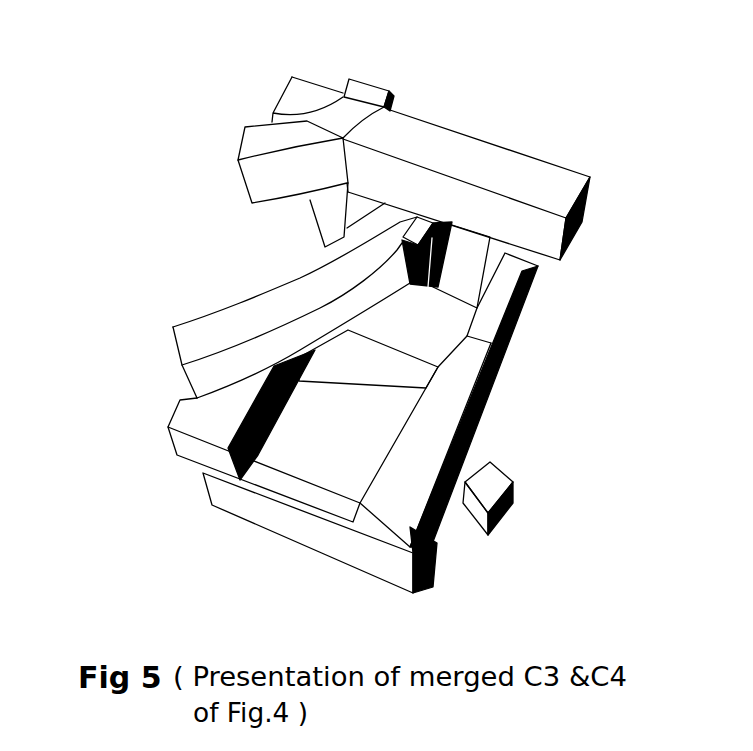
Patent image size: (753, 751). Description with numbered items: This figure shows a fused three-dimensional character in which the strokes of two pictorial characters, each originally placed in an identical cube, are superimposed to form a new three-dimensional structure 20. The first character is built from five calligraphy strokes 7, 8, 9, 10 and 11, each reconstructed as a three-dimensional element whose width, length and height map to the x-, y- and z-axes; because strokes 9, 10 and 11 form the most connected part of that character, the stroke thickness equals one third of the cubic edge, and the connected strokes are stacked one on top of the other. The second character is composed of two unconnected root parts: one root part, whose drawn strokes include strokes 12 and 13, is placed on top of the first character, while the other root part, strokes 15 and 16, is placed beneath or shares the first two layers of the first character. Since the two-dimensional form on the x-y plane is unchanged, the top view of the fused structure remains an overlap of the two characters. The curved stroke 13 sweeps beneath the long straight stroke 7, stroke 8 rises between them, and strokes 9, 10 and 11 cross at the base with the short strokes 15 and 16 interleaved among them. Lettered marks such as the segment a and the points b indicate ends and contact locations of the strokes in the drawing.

The stroke 7 is at (438, 122).
The stroke 8 is at (453, 247).
The stroke 9 is at (202, 407).
The stroke 10 is at (505, 363).
The stroke 11 is at (278, 512).
The stroke 12 is at (355, 82).
The stroke 13 is at (322, 278).
The stroke 15 is at (512, 287).
The stroke 16 is at (497, 475).
The merged assembly 20 is at (100, 400).
The curved segment a is at (285, 52).
The bonding point b is at (168, 338).